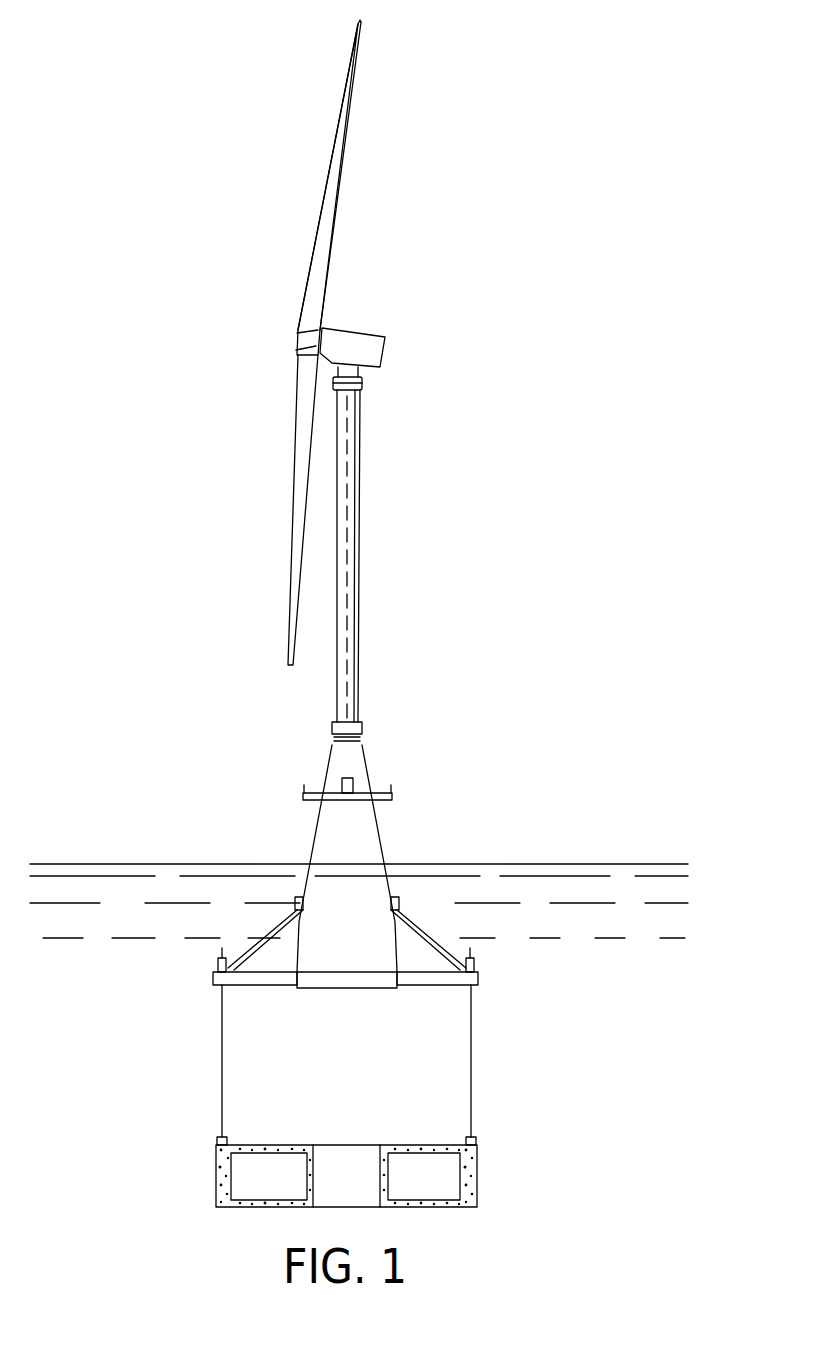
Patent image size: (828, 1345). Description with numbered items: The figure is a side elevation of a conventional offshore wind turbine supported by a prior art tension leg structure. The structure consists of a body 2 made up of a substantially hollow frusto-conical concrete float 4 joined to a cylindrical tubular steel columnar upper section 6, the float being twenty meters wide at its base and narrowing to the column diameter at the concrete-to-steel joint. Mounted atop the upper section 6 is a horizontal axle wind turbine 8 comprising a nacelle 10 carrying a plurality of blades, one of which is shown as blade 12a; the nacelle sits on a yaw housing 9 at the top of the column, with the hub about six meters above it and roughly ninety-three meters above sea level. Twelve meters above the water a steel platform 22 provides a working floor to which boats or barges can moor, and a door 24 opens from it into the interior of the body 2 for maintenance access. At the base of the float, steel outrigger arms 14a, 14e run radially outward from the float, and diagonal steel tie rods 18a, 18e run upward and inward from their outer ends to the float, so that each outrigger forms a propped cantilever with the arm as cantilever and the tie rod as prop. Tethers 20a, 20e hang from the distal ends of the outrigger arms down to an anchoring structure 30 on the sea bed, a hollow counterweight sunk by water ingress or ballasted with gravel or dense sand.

The body 2 is at (530, 326).
The frusto-conical concrete float 4 is at (327, 808).
The columnar upper section 6 is at (352, 656).
The horizontal axle wind turbine 8 is at (248, 17).
The yaw housing 9 is at (362, 385).
The nacelle 10 is at (371, 333).
The blade 12a is at (333, 216).
The outrigger arm 14a is at (214, 976).
The outrigger arm 14e is at (433, 988).
The diagonal tie rod 18a is at (248, 960).
The diagonal tie rod 18e is at (417, 912).
The tether 20a is at (221, 1094).
The tether 20e is at (473, 1072).
The steel platform 22 is at (382, 792).
The door 24 is at (348, 782).
The anchoring structure 30 is at (478, 1177).